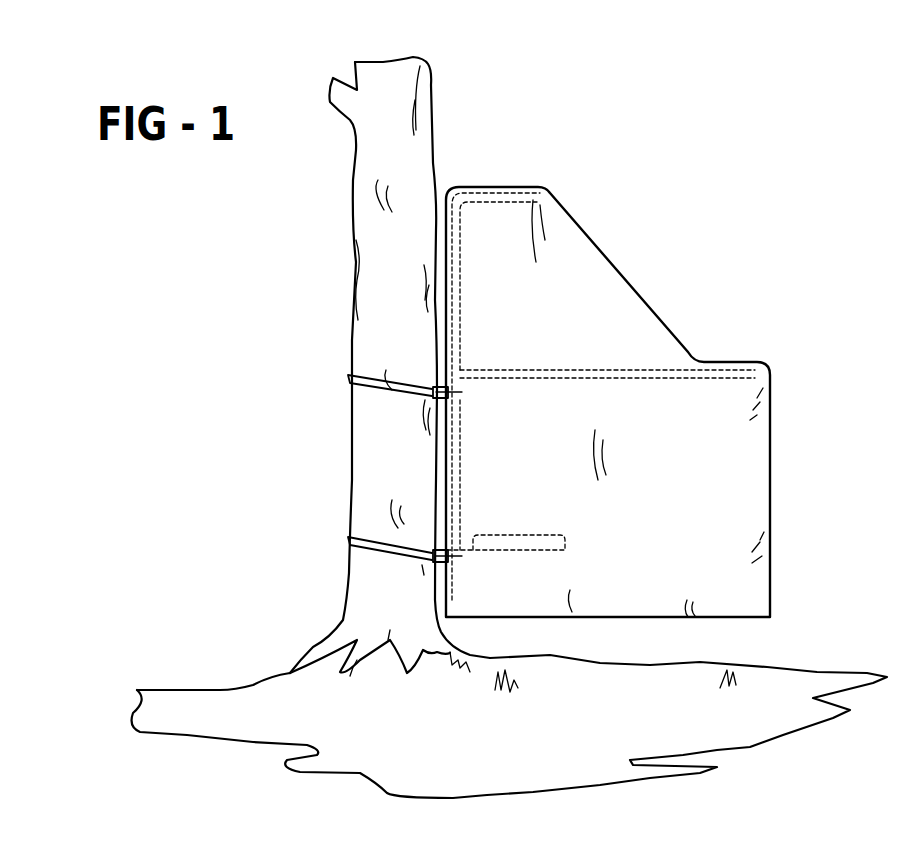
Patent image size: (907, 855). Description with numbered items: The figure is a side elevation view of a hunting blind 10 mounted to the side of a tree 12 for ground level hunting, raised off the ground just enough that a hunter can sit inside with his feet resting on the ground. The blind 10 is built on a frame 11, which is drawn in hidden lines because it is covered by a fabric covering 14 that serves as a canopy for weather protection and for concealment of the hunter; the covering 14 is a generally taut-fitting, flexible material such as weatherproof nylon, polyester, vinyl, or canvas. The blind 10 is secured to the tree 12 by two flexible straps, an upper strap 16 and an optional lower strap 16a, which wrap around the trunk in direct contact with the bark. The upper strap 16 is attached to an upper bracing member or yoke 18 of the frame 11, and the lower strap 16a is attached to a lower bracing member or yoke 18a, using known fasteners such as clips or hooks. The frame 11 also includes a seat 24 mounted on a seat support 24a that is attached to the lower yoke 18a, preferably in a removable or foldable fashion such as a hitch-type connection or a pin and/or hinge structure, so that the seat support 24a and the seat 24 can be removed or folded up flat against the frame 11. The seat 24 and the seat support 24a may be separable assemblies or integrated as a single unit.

The blind 10 is at (677, 240).
The frame 11 is at (437, 460).
The tree 12 is at (433, 88).
The fabric covering 14 is at (743, 483).
The upper strap 16 is at (380, 382).
The lower strap 16a is at (370, 540).
The upper bracing member or yoke 18 is at (433, 397).
The lower bracing member or yoke 18a is at (432, 562).
The seat 24 is at (547, 553).
The seat support 24a is at (490, 553).